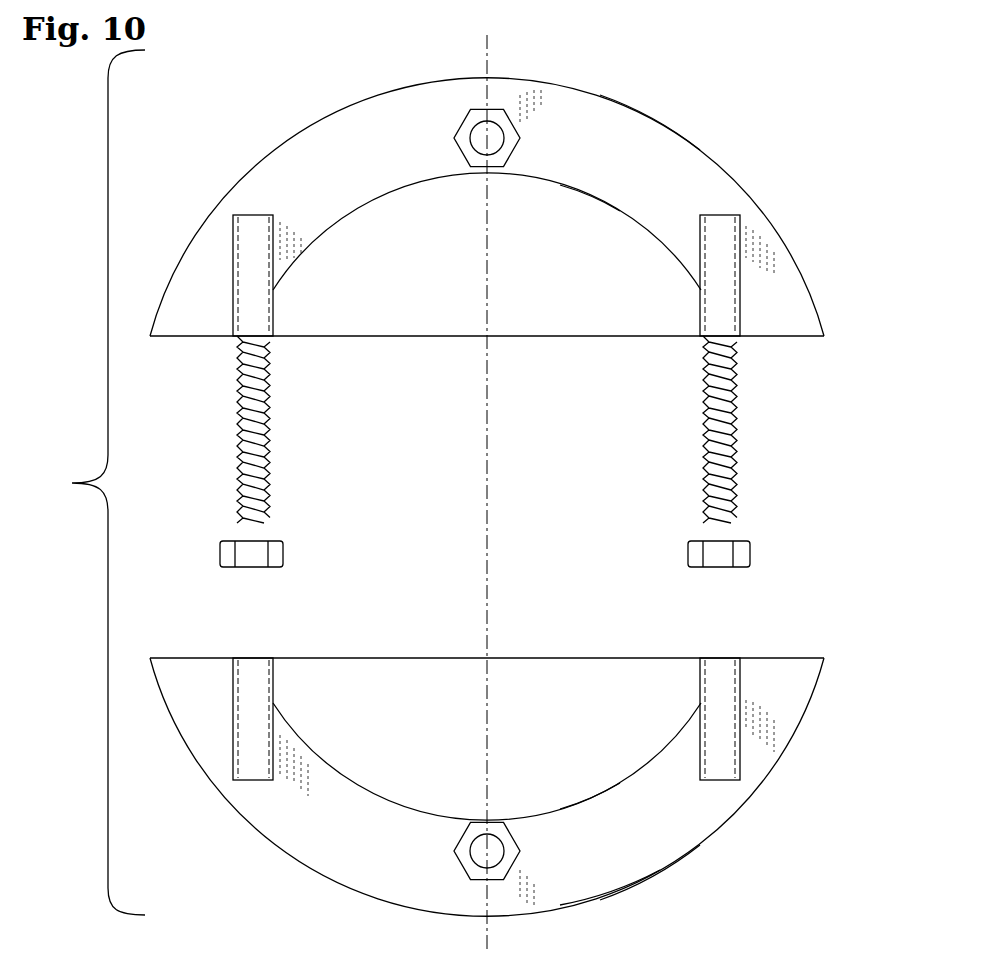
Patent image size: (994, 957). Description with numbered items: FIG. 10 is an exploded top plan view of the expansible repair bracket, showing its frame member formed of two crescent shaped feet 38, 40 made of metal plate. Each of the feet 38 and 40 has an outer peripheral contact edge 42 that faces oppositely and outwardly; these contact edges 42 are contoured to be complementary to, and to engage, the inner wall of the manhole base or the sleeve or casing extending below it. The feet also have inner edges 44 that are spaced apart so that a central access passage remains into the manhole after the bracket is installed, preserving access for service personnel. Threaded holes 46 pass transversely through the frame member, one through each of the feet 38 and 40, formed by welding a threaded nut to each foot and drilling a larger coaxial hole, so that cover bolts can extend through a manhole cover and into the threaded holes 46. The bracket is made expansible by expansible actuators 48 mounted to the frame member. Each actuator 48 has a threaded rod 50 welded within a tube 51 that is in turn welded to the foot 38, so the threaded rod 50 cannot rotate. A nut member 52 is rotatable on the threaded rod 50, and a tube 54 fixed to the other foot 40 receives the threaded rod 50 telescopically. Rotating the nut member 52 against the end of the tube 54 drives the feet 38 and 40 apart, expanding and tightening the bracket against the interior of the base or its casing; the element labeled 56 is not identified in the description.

The crescent shaped foot 38 is at (353, 122).
The crescent shaped foot 40 is at (700, 815).
The outer peripheral contact edge 42 is at (640, 110).
The inner edge 44 is at (592, 192).
The threaded hole 46 is at (476, 136).
The expansible actuator 48 is at (756, 424).
The threaded rod 50 is at (240, 487).
The tube 51 is at (233, 228).
The nut member 52 is at (240, 551).
The tube 54 is at (233, 765).
The clamp body 56 is at (628, 857).